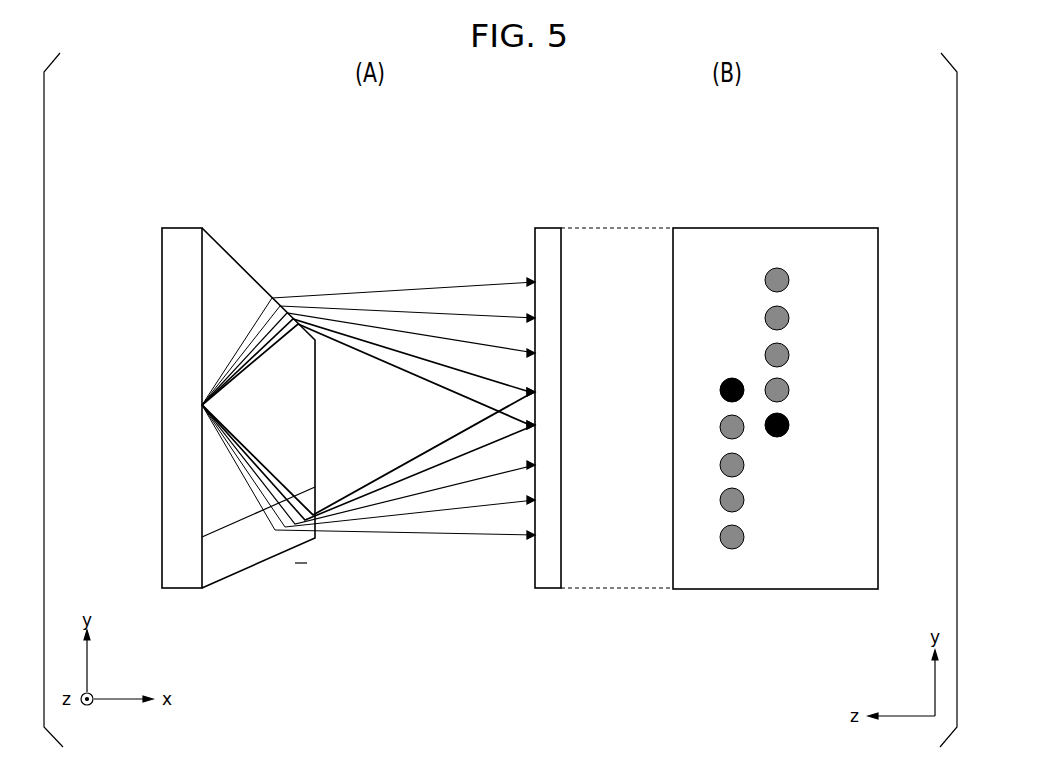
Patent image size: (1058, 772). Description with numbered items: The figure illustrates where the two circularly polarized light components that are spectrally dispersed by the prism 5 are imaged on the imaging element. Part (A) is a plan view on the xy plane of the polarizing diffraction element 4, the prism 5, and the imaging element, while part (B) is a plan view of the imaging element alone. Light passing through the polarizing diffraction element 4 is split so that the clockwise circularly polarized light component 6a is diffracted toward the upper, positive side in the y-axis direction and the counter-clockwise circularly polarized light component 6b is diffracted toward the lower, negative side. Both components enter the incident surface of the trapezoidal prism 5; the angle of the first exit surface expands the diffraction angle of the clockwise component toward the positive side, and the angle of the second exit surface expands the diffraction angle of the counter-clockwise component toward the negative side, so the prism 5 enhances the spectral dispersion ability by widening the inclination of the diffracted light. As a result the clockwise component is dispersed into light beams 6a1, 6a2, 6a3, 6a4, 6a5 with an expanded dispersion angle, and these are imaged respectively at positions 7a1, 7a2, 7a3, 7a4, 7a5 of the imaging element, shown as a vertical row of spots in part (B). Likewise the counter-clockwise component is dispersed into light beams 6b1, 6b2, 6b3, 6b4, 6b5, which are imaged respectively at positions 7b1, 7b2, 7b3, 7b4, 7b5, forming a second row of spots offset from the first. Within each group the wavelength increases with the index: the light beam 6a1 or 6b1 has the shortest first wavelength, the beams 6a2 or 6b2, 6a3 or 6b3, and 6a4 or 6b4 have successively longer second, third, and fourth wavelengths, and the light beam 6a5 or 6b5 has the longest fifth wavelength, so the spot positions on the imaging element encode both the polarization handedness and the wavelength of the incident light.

The polarizing diffraction element 4 is at (172, 244).
The prism 5 is at (228, 277).
The clockwise circularly polarized light component 6a is at (552, 146).
The light beam 6a1 is at (330, 323).
The light beam 6a2 is at (365, 333).
The light beam 6a3 is at (397, 327).
The light beam 6a4 is at (455, 313).
The light beam 6a5 is at (497, 282).
The counter-clockwise circularly polarized light component 6b is at (527, 640).
The light beam 6b1 is at (346, 493).
The light beam 6b2 is at (372, 495).
The light beam 6b3 is at (400, 498).
The light beam 6b4 is at (440, 511).
The light beam 6b5 is at (487, 537).
The imaging position 7a1 is at (789, 425).
The imaging position 7a2 is at (789, 390).
The imaging position 7a3 is at (789, 355).
The imaging position 7a4 is at (789, 318).
The imaging position 7a5 is at (789, 280).
The imaging position 7b1 is at (742, 398).
The imaging position 7b2 is at (744, 436).
The imaging position 7b3 is at (744, 467).
The imaging position 7b4 is at (744, 503).
The imaging position 7b5 is at (743, 543).